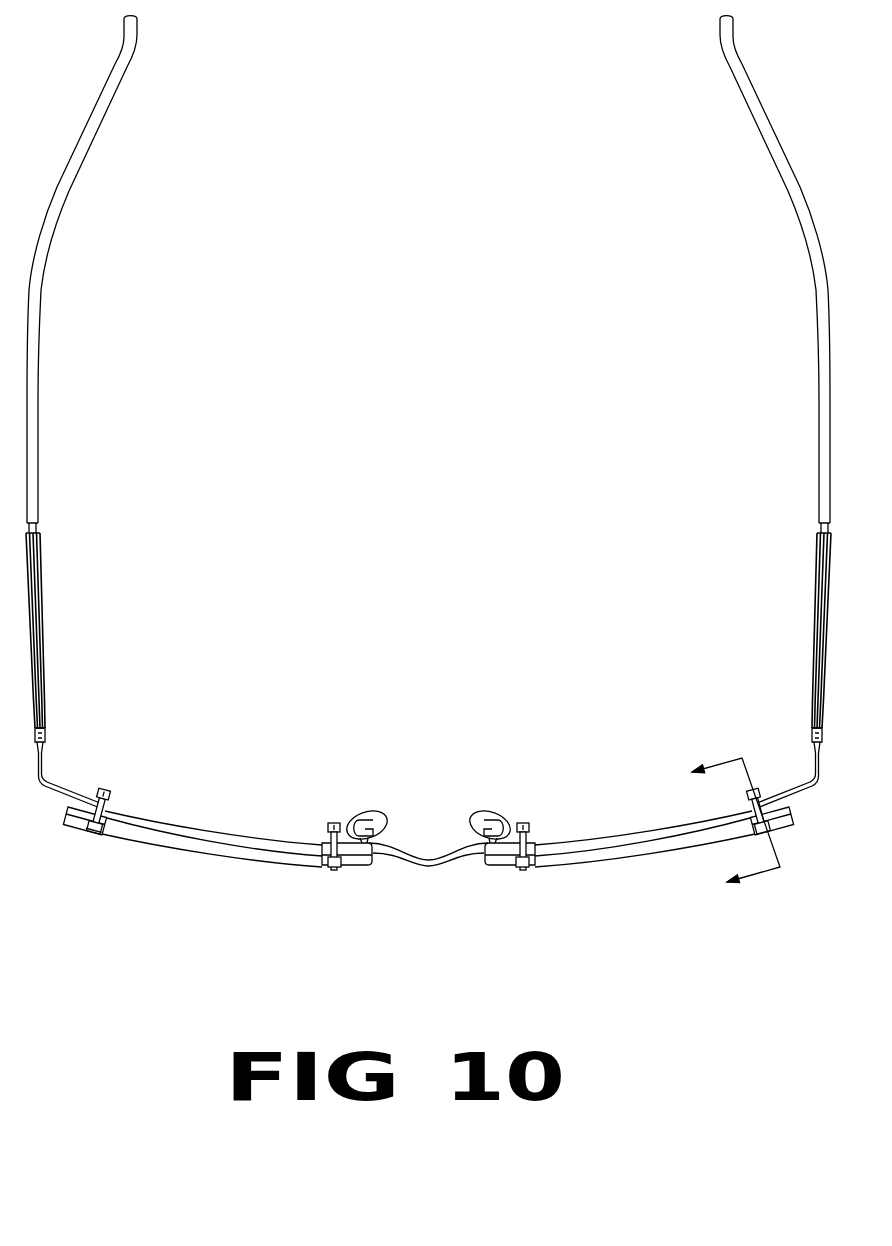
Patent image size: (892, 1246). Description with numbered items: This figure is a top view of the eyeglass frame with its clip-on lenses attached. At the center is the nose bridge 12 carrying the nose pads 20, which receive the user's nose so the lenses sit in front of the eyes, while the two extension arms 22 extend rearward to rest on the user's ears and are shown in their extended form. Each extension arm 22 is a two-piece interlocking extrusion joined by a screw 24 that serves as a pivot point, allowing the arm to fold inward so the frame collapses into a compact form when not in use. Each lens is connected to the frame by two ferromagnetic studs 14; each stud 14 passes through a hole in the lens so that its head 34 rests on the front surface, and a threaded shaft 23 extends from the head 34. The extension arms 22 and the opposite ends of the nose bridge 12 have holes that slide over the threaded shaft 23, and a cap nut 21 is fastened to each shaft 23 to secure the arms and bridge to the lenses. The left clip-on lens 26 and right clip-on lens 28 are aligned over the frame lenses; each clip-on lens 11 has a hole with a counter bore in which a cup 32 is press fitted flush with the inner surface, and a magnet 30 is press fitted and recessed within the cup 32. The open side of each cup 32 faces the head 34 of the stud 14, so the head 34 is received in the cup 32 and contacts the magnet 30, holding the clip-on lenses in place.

The clip-on lens 11 is at (712, 834).
The nose bridge 12 is at (430, 858).
The ferromagnetic stud 14 is at (92, 810).
The nose pad 20 is at (366, 812).
The cap nut 21 is at (105, 790).
The extension arm 22 is at (33, 592).
The threaded shaft 23 is at (110, 802).
The screw 24 is at (45, 707).
The left clip-on lens 26 is at (613, 864).
The right clip-on lens 28 is at (227, 858).
The magnet 30 is at (93, 835).
The cup 32 is at (90, 833).
The head 34 is at (101, 834).